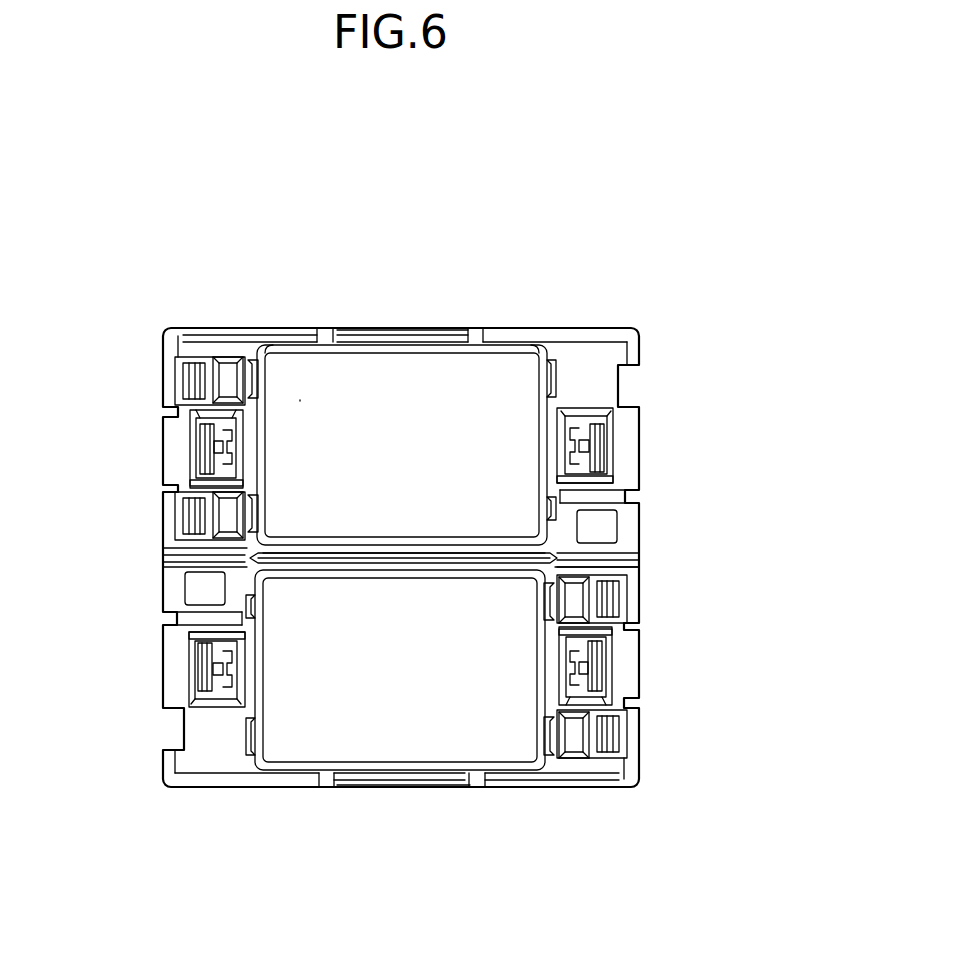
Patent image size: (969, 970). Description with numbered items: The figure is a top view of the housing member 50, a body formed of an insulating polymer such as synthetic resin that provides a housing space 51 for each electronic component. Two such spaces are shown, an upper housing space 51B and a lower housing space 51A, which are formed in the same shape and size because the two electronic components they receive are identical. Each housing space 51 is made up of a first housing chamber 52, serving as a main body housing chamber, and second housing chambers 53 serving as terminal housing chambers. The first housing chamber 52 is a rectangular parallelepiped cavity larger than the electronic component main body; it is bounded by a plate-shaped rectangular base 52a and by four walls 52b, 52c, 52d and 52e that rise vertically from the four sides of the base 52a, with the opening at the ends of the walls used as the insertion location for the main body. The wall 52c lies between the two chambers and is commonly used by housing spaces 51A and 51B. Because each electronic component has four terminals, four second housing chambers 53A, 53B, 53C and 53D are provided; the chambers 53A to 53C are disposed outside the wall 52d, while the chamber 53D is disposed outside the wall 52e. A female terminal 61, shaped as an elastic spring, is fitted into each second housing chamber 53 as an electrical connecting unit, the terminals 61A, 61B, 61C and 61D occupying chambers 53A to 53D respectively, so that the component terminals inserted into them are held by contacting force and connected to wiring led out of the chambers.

The housing member 50 is at (566, 150).
The housing space 51 is at (401, 557).
The housing space 51A is at (698, 905).
The housing space 51B is at (642, 210).
The first housing chamber 52 is at (478, 385).
The base 52a is at (425, 377).
The wall 52b is at (333, 327).
The wall 52c is at (398, 570).
The wall 52d is at (267, 380).
The wall 52e is at (540, 376).
The second housing chamber 53 is at (401, 557).
The second housing chamber 53A is at (227, 385).
The second housing chamber 53B is at (237, 446).
The second housing chamber 53C is at (232, 517).
The second housing chamber 53D is at (581, 427).
The terminal 61 is at (399, 572).
The terminal 61A is at (213, 380).
The terminal 61B is at (217, 447).
The terminal 61C is at (215, 510).
The terminal 61D is at (597, 443).